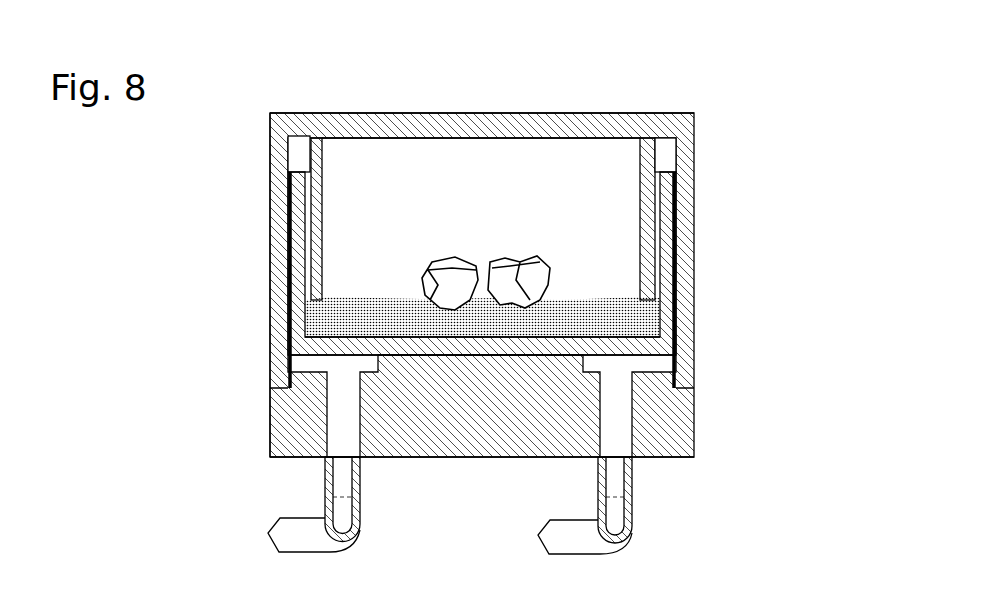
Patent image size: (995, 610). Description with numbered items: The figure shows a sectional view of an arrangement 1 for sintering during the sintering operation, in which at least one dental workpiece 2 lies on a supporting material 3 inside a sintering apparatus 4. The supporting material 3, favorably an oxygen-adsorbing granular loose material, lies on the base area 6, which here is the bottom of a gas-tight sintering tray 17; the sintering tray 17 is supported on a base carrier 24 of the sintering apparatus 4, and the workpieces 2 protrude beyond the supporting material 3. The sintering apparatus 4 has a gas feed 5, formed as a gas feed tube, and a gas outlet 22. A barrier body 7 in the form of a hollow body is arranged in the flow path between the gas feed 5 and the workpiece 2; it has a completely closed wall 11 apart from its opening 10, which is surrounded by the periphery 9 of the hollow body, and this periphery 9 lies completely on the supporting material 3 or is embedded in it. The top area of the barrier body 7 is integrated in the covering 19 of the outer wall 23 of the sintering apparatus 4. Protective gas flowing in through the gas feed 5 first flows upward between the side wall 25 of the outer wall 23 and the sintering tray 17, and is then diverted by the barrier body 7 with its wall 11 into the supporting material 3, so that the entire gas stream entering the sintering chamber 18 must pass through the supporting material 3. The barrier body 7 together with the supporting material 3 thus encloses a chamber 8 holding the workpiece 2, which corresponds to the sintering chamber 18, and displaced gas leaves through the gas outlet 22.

The arrangement 1 is at (740, 128).
The dental workpiece 2 is at (522, 283).
The supporting material 3 is at (657, 318).
The sintering apparatus 4 is at (697, 235).
The gas feed 5 is at (340, 423).
The base area 6 is at (538, 333).
The barrier body 7 is at (646, 183).
The chamber 8 is at (412, 225).
The periphery 9 is at (655, 300).
The opening 10 is at (340, 338).
The wall 11 is at (650, 212).
The sintering tray 17 is at (660, 345).
The sintering chamber 18 is at (412, 225).
The covering 19 is at (375, 125).
The gas outlet 22 is at (618, 433).
The outer wall 23 is at (272, 213).
The base carrier 24 is at (392, 447).
The side wall 25 is at (272, 213).